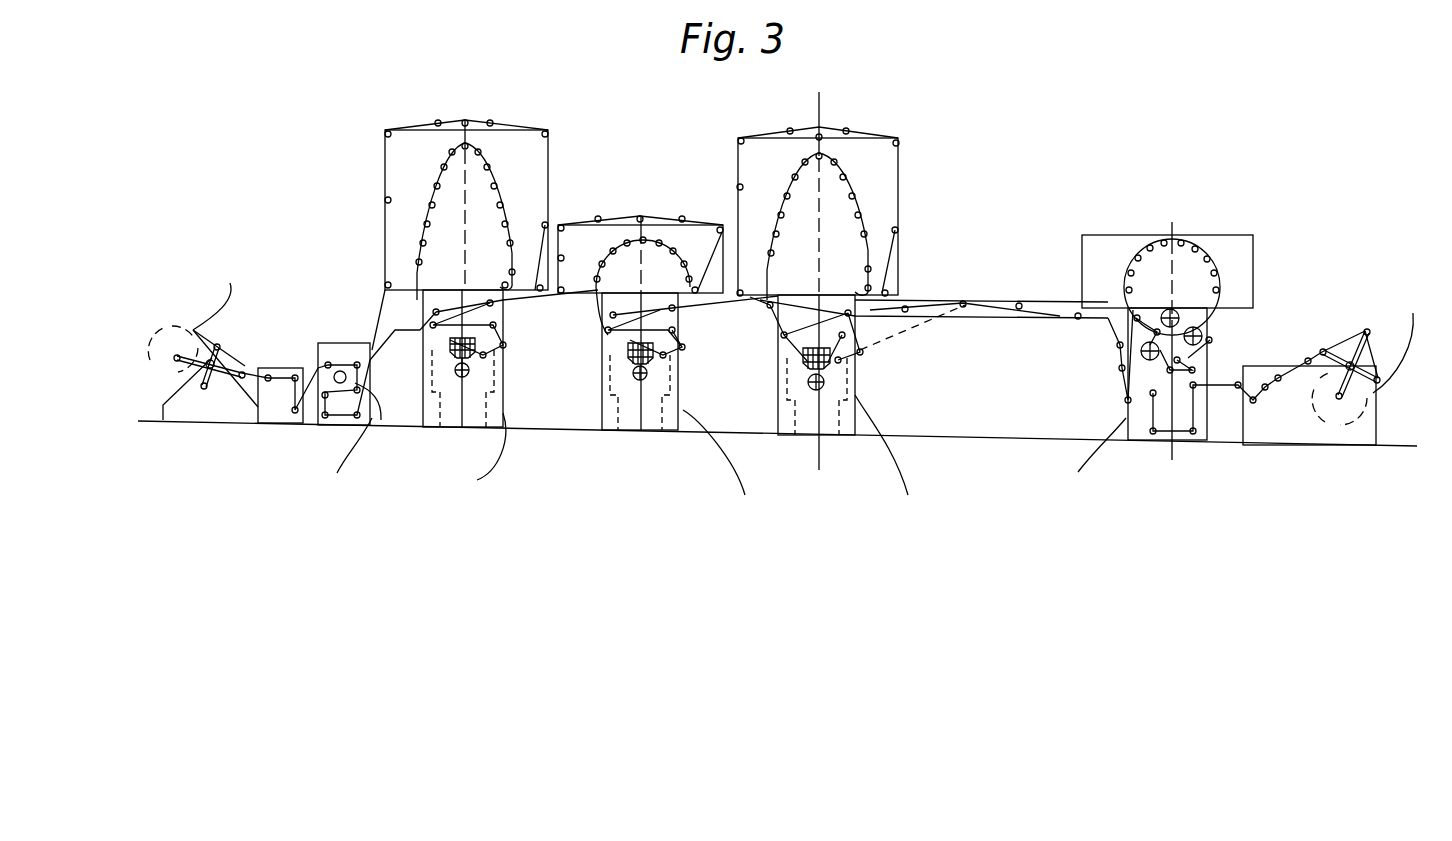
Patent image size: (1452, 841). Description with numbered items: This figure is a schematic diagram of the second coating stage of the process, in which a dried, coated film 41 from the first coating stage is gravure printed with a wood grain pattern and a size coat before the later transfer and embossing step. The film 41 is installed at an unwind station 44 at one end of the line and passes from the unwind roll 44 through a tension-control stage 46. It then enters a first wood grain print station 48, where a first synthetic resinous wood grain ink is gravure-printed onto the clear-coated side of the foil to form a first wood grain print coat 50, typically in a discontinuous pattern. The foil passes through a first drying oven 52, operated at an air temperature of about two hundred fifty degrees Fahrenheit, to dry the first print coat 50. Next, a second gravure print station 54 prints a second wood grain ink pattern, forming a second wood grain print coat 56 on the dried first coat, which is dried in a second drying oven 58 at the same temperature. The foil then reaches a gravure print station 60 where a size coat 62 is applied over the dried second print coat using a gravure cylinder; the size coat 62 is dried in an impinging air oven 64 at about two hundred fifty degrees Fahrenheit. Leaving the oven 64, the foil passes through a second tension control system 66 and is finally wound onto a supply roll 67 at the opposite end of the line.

The dried, coated film 41 is at (1285, 357).
The unwind station 44 is at (1343, 426).
The tension-control stage 46 is at (1118, 400).
The first wood grain print station 48 is at (864, 378).
The first wood grain print coat 50 is at (868, 212).
The first drying oven 52 is at (900, 152).
The second gravure print station 54 is at (595, 408).
The second wood grain print coat 56 is at (612, 232).
The second drying oven 58 is at (691, 215).
The gravure print station 60 is at (412, 402).
The size coat 62 is at (490, 150).
The impinging air oven 64 is at (425, 128).
The second tension control system 66 is at (290, 362).
The supply roll 67 is at (164, 332).